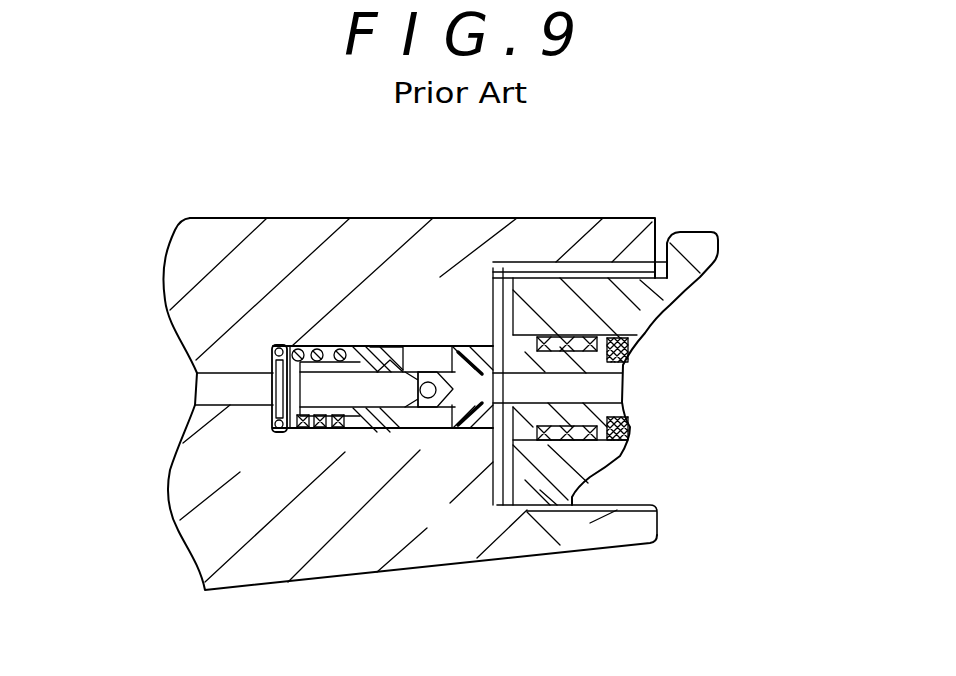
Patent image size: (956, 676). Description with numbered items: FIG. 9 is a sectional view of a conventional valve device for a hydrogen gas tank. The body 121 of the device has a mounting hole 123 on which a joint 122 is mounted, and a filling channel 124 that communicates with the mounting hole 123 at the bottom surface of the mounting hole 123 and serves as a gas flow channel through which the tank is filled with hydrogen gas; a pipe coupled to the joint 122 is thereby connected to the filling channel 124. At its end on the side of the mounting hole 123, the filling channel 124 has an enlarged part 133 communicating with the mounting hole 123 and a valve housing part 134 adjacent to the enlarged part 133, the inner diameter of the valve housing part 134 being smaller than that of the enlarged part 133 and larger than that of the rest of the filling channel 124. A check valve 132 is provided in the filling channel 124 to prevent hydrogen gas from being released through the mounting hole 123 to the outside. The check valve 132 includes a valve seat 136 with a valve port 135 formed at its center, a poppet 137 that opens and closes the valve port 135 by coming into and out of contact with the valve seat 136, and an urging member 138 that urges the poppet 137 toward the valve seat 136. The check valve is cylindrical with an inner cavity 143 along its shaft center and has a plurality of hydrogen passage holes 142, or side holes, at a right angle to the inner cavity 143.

The body 121 is at (180, 260).
The joint 122 is at (712, 256).
The mounting hole 123 is at (607, 261).
The filling channel 124 is at (208, 392).
The check valve 132 is at (263, 326).
The enlarged part 133 is at (486, 340).
The valve housing part 134 is at (362, 346).
The valve port 135 is at (455, 348).
The valve seat 136 is at (478, 420).
The poppet 137 is at (367, 431).
The urging member 138 is at (280, 432).
The hydrogen passage holes 142 is at (428, 434).
The inner cavity 143 is at (397, 366).